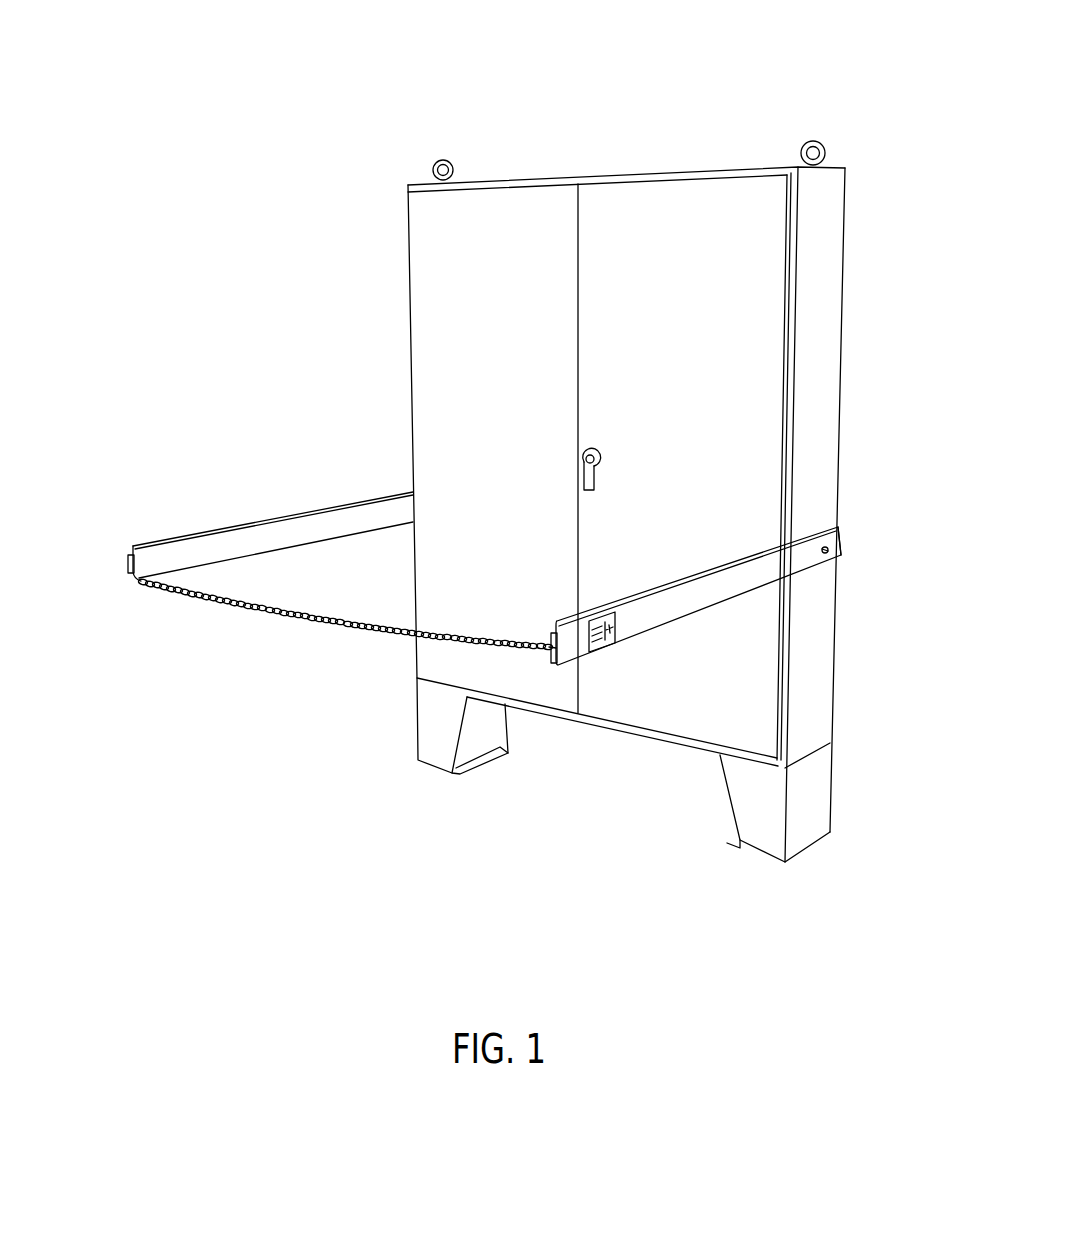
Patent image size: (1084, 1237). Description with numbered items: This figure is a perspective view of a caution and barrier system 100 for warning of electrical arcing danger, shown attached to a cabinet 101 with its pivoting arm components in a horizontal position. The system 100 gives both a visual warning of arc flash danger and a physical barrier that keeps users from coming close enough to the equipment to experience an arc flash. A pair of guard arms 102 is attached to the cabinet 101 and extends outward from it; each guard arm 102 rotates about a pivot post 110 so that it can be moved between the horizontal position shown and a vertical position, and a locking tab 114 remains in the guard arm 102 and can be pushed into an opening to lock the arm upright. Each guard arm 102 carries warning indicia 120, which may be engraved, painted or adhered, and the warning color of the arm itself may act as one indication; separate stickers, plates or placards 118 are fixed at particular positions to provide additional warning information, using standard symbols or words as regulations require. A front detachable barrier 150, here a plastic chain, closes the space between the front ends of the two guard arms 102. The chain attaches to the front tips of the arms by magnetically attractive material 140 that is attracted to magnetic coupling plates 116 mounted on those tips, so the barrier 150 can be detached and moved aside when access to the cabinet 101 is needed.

The caution and barrier system 100 is at (856, 58).
The cabinet 101 is at (830, 237).
The guard arm 102 is at (275, 518).
The pivot post 110 is at (837, 550).
The locking tab 114 is at (838, 553).
The magnetic coupling plate 116 is at (550, 643).
The warning placard 118 is at (605, 610).
The warning indicia 120 is at (720, 612).
The magnetically attractive material 140 is at (563, 660).
The front detachable barrier 150 is at (320, 622).